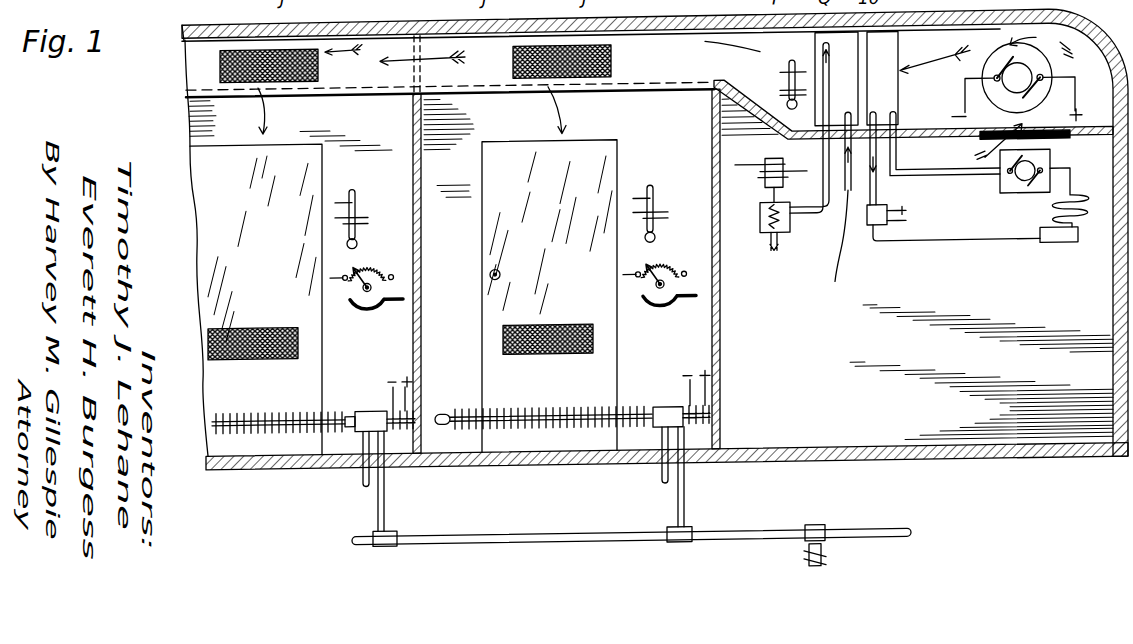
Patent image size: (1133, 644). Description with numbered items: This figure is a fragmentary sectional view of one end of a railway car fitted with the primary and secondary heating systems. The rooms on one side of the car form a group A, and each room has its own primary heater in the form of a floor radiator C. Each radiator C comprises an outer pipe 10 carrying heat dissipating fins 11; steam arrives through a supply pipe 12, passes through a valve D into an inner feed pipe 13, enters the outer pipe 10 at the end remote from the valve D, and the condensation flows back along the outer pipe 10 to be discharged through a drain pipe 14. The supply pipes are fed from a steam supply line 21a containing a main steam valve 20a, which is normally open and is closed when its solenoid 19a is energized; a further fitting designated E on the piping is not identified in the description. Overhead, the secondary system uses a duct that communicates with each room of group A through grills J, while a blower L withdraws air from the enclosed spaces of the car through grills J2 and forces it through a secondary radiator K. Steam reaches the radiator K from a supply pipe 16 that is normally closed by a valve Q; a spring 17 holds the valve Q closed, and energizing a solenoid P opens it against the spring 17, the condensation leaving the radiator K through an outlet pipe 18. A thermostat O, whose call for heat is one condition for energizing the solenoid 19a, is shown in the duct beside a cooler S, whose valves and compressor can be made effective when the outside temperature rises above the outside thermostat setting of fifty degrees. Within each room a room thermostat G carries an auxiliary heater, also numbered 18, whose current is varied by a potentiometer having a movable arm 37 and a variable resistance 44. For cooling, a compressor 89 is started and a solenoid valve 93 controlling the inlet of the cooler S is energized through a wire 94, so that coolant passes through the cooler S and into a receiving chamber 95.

The group of rooms A is at (403, 298).
The grill J is at (247, 88).
The grill J2 is at (270, 331).
The room thermostat G is at (499, 205).
The condensation outlet pipe 18 is at (343, 230).
The variable resistance 44 is at (368, 272).
The movable arm 37 is at (343, 285).
The heat dissipating fins 11 is at (238, 416).
The floor radiator C is at (268, 415).
The outer pipe 10 is at (298, 418).
The valve D is at (677, 415).
The inner feed pipe 13 is at (661, 416).
The drain pipe 14 is at (360, 479).
The supply pipe 12 is at (382, 506).
The pipe fitting E is at (404, 472).
The main steam valve 20a is at (815, 534).
The solenoid 19a is at (808, 567).
The steam supply line 21a is at (849, 549).
The secondary radiator K is at (815, 53).
The thermostat O is at (781, 85).
The cooler S is at (897, 110).
The blower L is at (1037, 67).
The solenoid P is at (758, 193).
The spring 17 is at (760, 229).
The valve Q is at (780, 256).
The supply pipe 16 is at (782, 262).
The solenoid valve 93 is at (880, 222).
The compressor 89 is at (1015, 208).
The wire 94 is at (1078, 212).
The receiving chamber 95 is at (1063, 258).